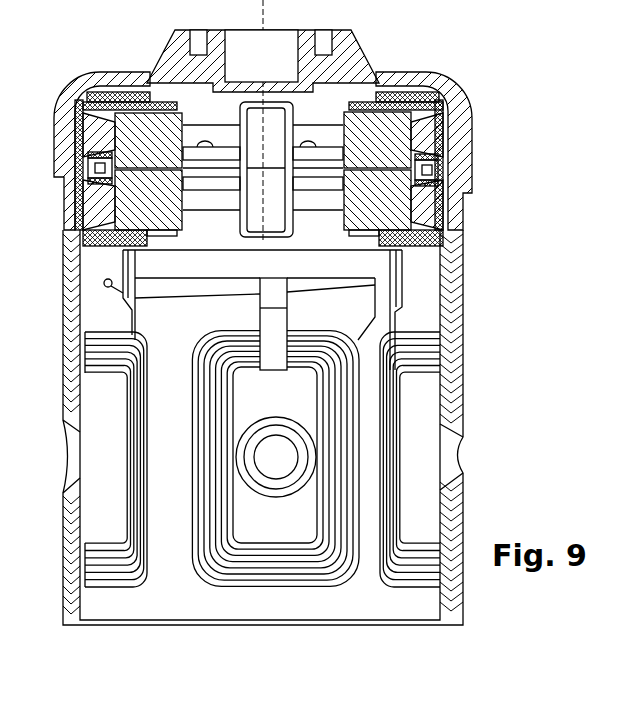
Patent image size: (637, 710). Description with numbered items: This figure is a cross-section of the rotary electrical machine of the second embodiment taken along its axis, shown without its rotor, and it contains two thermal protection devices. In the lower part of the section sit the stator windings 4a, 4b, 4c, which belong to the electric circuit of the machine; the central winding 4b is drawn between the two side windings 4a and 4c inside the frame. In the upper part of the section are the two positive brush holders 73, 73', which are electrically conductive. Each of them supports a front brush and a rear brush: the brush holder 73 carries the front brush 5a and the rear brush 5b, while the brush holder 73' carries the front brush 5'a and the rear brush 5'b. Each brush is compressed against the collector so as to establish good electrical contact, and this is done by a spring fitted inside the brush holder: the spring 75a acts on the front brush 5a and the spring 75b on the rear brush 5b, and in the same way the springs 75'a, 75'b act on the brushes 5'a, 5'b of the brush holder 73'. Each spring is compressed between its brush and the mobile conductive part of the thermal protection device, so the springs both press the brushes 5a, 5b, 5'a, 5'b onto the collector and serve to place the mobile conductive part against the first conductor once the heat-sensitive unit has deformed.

The front brush 5a is at (163, 127).
The rear brush 5b is at (177, 222).
The front brush 5'a is at (377, 99).
The rear brush 5'b is at (429, 208).
The spring 75a is at (110, 133).
The spring 75b is at (110, 198).
The spring 75'a is at (452, 150).
The spring 75'b is at (465, 206).
The positive brush holder 73 is at (216, 295).
The positive brush holder 73' is at (426, 296).
The winding 4a is at (95, 360).
The winding 4b is at (260, 575).
The winding 4c is at (423, 352).